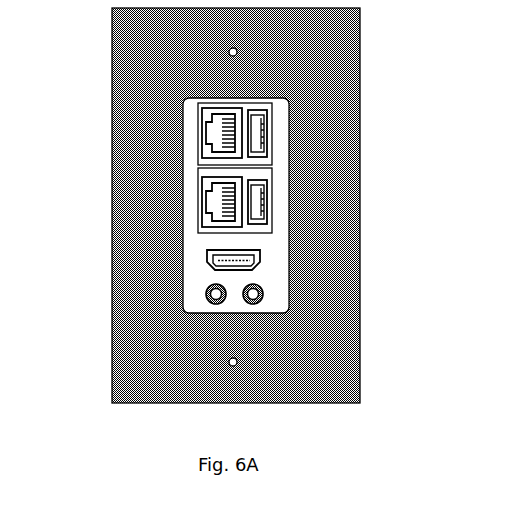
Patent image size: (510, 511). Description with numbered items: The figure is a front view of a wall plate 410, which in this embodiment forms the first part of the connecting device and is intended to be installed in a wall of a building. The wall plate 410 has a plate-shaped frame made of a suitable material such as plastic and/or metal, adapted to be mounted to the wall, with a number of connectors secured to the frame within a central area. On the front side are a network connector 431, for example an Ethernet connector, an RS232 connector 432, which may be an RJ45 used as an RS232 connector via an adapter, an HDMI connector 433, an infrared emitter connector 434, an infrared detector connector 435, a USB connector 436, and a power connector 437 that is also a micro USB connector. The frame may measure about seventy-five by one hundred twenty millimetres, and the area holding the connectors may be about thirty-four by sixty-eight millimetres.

The wall plate 410 is at (140, 388).
The network connector 431 is at (190, 134).
The RS232 connector 432 is at (190, 201).
The HDMI connector 433 is at (190, 260).
The infrared emitter connector 434 is at (188, 297).
The infrared detector connector 435 is at (283, 295).
The USB connector 436 is at (280, 198).
The power connector 437 is at (278, 132).